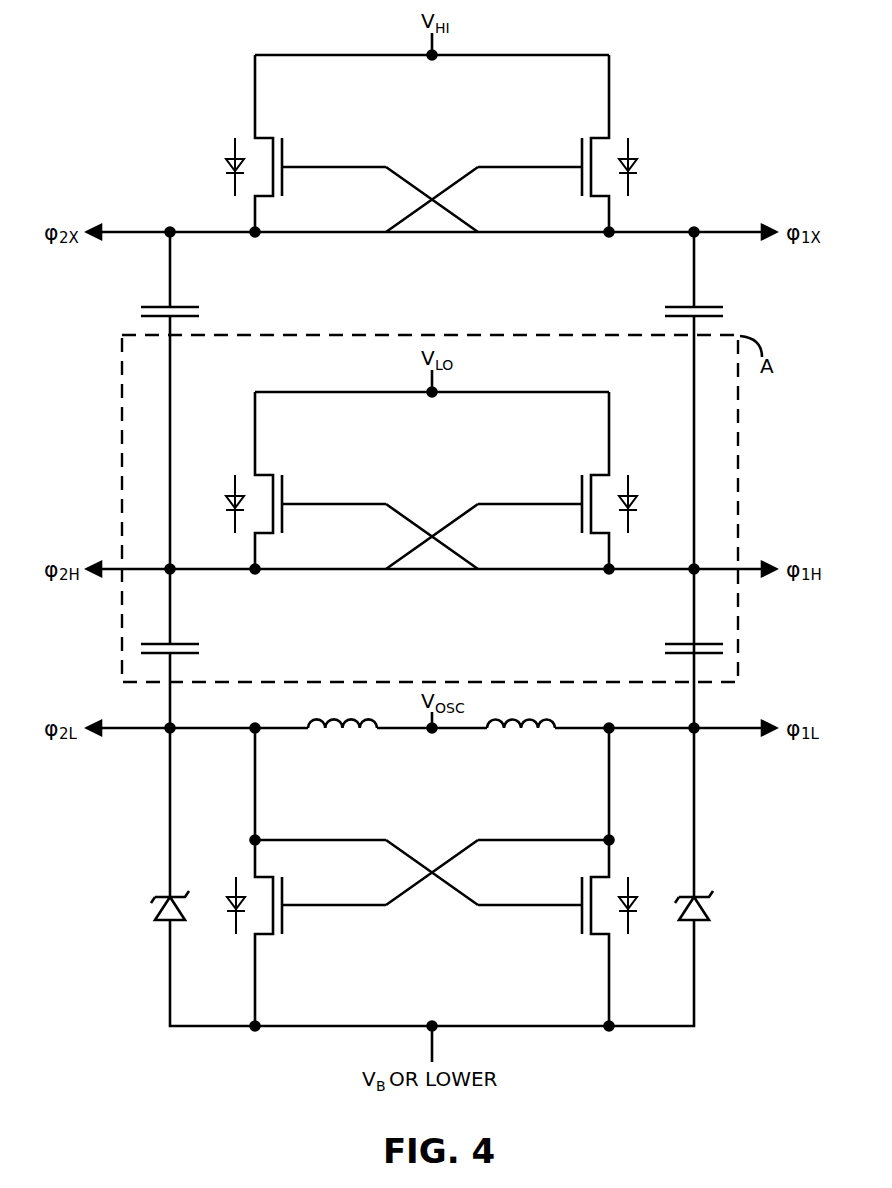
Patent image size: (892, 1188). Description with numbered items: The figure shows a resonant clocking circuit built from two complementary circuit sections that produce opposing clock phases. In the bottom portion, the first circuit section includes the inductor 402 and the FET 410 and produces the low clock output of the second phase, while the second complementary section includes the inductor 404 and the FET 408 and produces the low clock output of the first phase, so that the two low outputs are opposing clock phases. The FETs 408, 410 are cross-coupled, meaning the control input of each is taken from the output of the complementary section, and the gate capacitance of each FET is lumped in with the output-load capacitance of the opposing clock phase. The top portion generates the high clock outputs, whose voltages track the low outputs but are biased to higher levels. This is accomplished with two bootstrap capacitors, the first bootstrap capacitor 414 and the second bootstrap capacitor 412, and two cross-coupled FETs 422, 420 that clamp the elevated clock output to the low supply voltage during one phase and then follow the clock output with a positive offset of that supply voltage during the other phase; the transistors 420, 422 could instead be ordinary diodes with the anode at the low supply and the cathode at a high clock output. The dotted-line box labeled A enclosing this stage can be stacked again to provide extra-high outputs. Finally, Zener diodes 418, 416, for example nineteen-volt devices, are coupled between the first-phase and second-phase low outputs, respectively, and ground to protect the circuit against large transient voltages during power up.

The inductor 402 is at (342, 710).
The inductor 404 is at (521, 710).
The FET 408 is at (557, 877).
The FET 410 is at (306, 877).
The bootstrap capacitor CB2 412 is at (190, 651).
The bootstrap capacitor CB1 414 is at (673, 644).
The Zener diode 416 is at (178, 601).
The Zener diode 418 is at (689, 602).
The cross-coupled FET 420 is at (557, 480).
The cross-coupled FET 422 is at (306, 480).